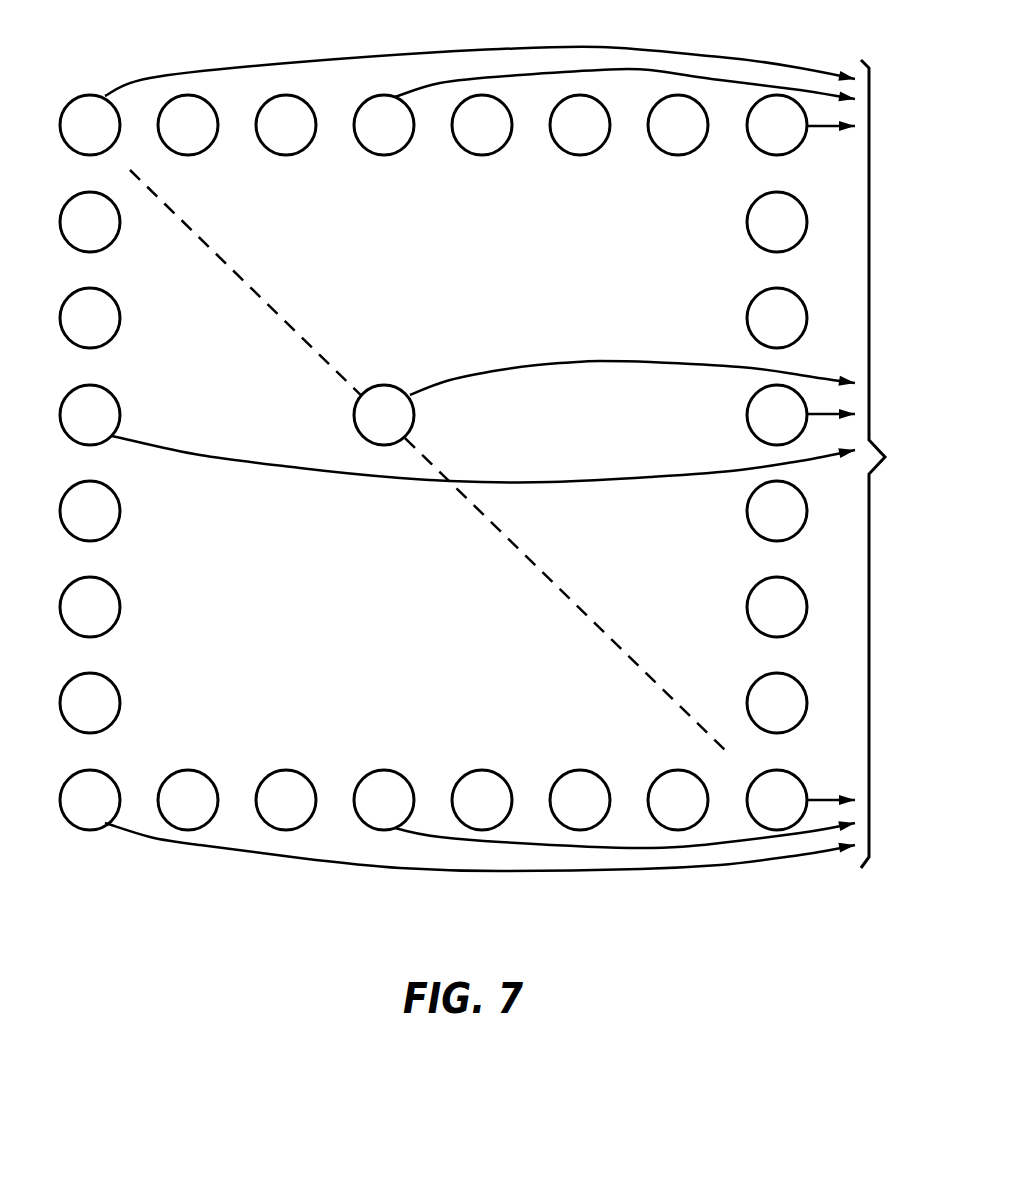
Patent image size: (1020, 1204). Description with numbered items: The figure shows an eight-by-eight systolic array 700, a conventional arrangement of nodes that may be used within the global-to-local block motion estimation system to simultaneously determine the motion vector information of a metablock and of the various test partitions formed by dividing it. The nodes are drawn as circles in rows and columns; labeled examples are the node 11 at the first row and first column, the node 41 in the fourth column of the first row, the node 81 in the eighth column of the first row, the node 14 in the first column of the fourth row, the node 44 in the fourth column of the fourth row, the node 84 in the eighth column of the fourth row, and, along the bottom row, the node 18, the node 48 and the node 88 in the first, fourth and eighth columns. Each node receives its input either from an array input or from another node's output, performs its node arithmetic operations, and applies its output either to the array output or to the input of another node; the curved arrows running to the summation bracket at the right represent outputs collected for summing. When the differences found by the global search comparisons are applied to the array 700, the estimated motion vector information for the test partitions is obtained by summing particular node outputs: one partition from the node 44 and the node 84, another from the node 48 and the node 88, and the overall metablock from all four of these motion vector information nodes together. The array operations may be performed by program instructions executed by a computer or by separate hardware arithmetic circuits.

The systolic array 700 is at (476, 29).
The node (first row, first column) 11 is at (90, 125).
The node (fourth column, first row) 41 is at (384, 125).
The node (eighth column, first row) 81 is at (777, 125).
The node (first column, fourth row) 14 is at (90, 415).
The motion vector information node (fourth column, fourth row) 44 is at (384, 415).
The motion vector information node (eighth column, fourth row) 84 is at (777, 415).
The node (first column, eighth row) 18 is at (90, 800).
The motion vector information node (fourth column, eighth row) 48 is at (384, 800).
The motion vector information node (eighth column, eighth row) 88 is at (777, 800).